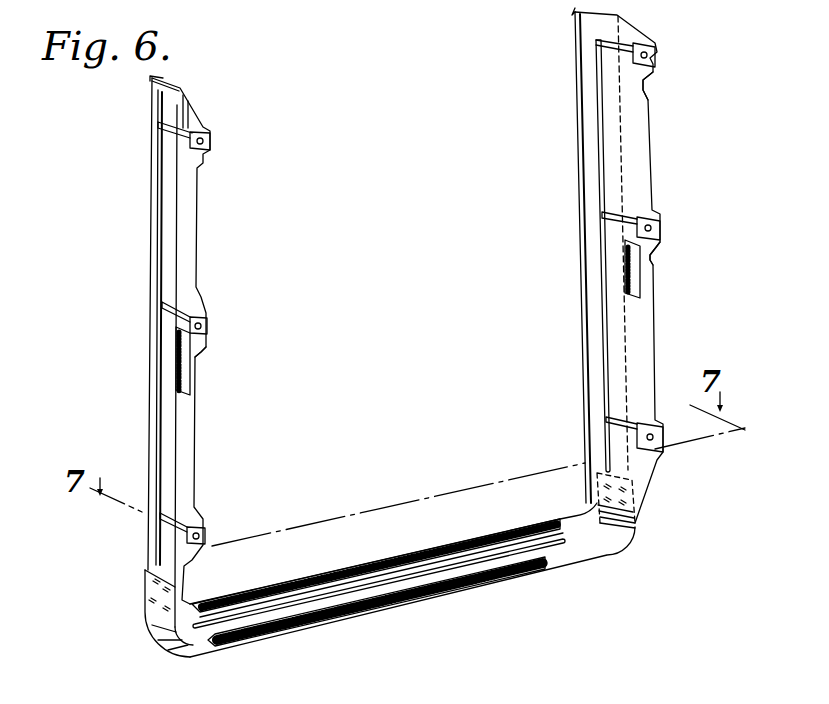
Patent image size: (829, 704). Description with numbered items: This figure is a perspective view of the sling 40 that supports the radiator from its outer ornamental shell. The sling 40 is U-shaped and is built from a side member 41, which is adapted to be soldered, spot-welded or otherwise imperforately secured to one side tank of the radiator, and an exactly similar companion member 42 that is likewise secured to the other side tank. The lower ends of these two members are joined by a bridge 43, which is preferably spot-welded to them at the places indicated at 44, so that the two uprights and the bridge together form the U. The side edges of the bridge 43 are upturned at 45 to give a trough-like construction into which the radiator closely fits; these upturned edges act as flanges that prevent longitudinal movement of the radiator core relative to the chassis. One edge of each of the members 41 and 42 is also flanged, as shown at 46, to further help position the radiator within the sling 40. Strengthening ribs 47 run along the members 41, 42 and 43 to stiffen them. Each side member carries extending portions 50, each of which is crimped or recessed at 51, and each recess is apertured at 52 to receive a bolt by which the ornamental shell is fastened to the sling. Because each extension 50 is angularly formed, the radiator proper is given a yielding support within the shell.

The sling 40 is at (151, 212).
The side member 41 is at (152, 380).
The member 42 is at (648, 158).
The bridge 43 is at (442, 590).
The spot-welded connection 44 is at (150, 600).
The upturned side edges 45 is at (473, 572).
The flange 46 is at (158, 77).
The strengthening ribs 47 is at (158, 288).
The extending portions 50 is at (200, 352).
The recess 51 is at (208, 322).
The aperture 52 is at (212, 142).